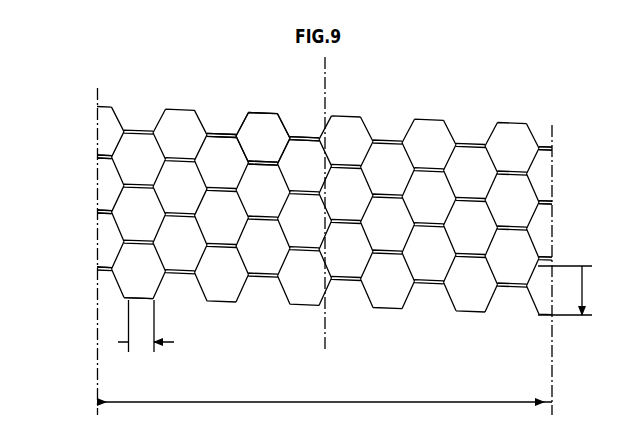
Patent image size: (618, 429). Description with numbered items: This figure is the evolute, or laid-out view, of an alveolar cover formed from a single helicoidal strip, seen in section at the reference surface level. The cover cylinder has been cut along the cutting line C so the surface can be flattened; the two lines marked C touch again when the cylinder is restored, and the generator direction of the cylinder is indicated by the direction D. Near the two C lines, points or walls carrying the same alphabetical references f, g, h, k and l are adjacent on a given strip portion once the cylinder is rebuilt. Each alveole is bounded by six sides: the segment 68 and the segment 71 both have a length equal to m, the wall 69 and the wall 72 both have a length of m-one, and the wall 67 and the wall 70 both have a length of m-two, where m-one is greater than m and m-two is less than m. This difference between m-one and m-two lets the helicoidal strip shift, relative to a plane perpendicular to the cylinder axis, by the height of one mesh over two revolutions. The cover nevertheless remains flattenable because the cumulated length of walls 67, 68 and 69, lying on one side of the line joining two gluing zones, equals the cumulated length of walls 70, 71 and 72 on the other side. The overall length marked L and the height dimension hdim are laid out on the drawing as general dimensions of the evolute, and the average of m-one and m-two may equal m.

The wall 67 is at (244, 121).
The segment 68 is at (262, 112).
The wall 69 is at (282, 121).
The wall 70 is at (286, 150).
The segment 71 is at (267, 162).
The wall 72 is at (236, 149).
The alphabetical reference point f is at (105, 152).
The alphabetical reference point g is at (105, 160).
The alphabetical reference point h is at (105, 208).
The alphabetical reference point k is at (105, 215).
The alphabetical reference point l is at (105, 265).
The cutting line C is at (96, 306).
The generator direction D is at (328, 78).
The mesh panel length L is at (325, 391).
The segment length m is at (146, 325).
The mesh height dimension hdim is at (565, 290).